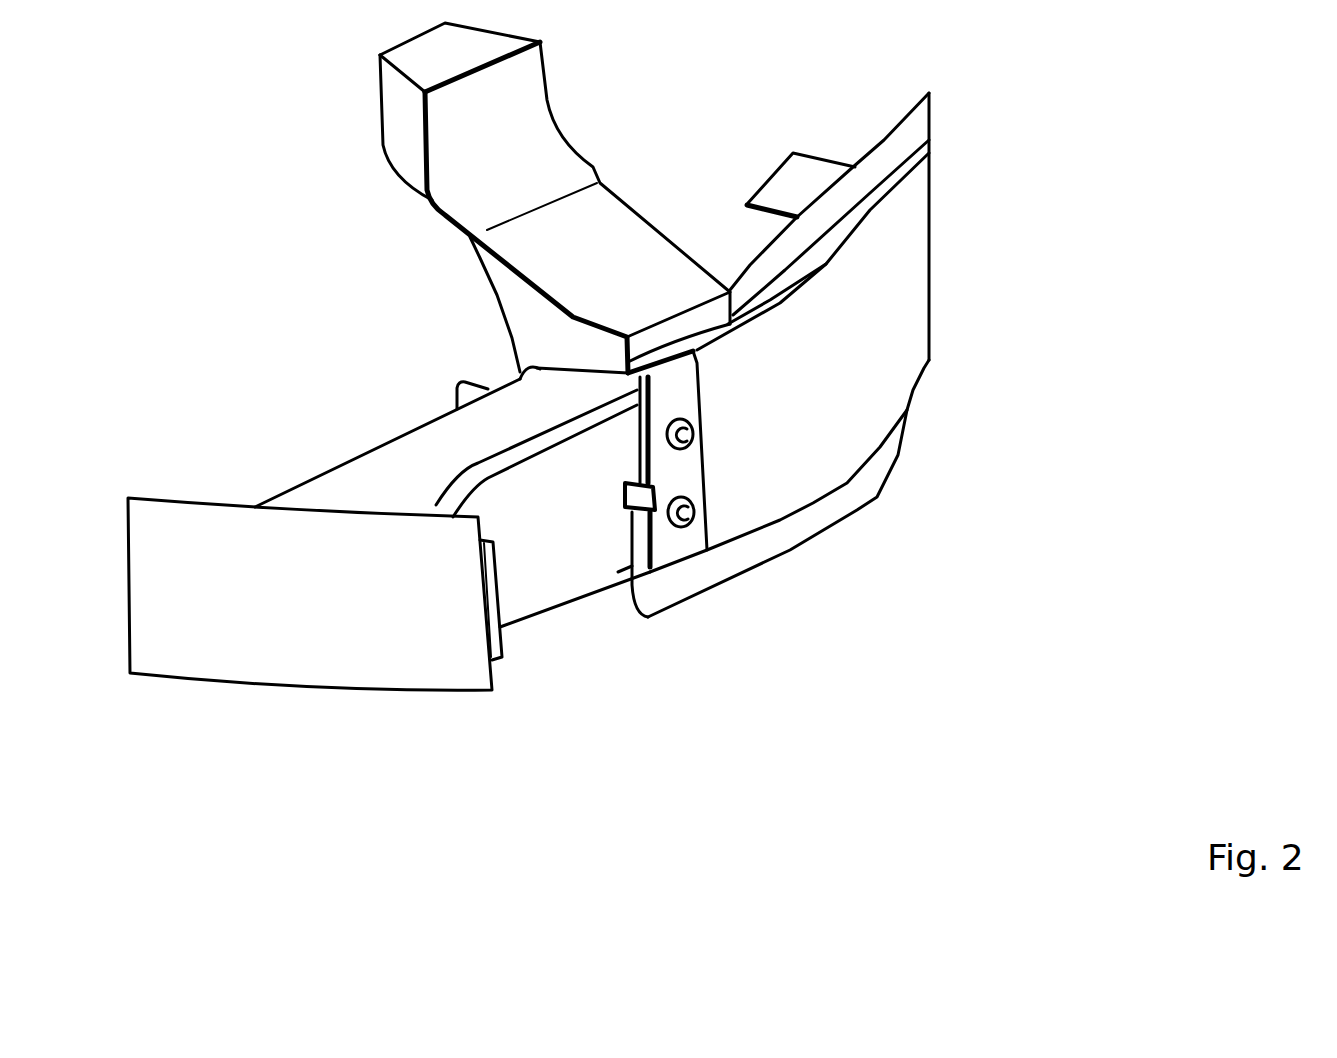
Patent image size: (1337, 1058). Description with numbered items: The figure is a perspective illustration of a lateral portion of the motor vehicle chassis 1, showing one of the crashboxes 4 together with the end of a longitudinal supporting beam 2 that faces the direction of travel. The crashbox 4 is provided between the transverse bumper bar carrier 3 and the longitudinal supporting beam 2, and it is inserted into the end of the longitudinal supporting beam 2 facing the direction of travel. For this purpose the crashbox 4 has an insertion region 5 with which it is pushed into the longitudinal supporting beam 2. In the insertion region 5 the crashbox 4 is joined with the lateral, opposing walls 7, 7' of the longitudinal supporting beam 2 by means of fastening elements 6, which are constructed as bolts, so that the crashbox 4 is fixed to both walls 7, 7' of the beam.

The motor vehicle chassis 1 is at (983, 217).
The longitudinal supporting beam 2 is at (876, 349).
The transverse bumper bar carrier 3 is at (256, 644).
The crashbox 4 is at (536, 571).
The insertion region 5 is at (697, 613).
The fastening elements 6 is at (685, 440).
The lateral wall 7 is at (655, 569).
The lateral wall 7' is at (459, 324).